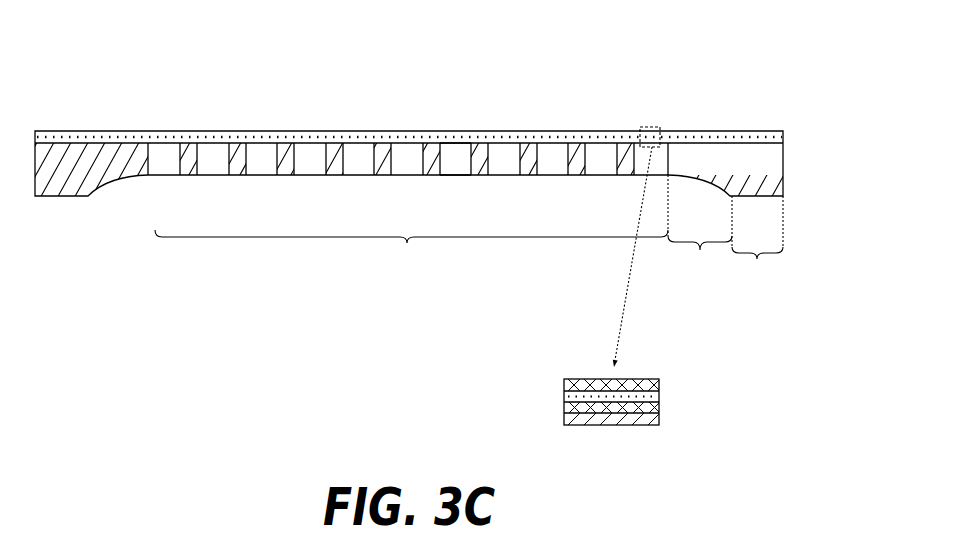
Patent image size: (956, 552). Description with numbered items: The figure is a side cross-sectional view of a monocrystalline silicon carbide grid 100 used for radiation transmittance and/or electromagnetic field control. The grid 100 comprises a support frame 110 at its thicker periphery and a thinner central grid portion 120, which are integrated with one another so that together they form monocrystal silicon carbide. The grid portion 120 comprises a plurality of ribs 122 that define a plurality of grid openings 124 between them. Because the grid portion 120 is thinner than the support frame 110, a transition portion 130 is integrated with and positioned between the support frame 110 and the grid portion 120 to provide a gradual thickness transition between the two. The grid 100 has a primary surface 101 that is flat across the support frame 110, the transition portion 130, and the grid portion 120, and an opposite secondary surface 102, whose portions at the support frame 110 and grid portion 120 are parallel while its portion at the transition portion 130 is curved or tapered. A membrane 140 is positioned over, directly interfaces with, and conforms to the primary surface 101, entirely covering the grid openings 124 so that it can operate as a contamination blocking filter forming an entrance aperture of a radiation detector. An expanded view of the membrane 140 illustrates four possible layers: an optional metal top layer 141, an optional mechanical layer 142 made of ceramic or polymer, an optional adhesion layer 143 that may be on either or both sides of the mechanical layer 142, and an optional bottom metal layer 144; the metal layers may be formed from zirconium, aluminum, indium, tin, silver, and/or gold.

The grid 100 is at (747, 82).
The primary surface 101 is at (770, 135).
The secondary surface 102 is at (765, 198).
The support frame 110 is at (757, 244).
The grid portion 120 is at (411, 226).
The ribs 122 is at (530, 155).
The grid openings 124 is at (452, 155).
The transition portion 130 is at (700, 239).
The membrane 140 is at (603, 137).
The metal top layer 141 is at (659, 385).
The mechanical layer 142 is at (659, 396).
The adhesion layer 143 is at (659, 407).
The bottom metal layer 144 is at (659, 418).